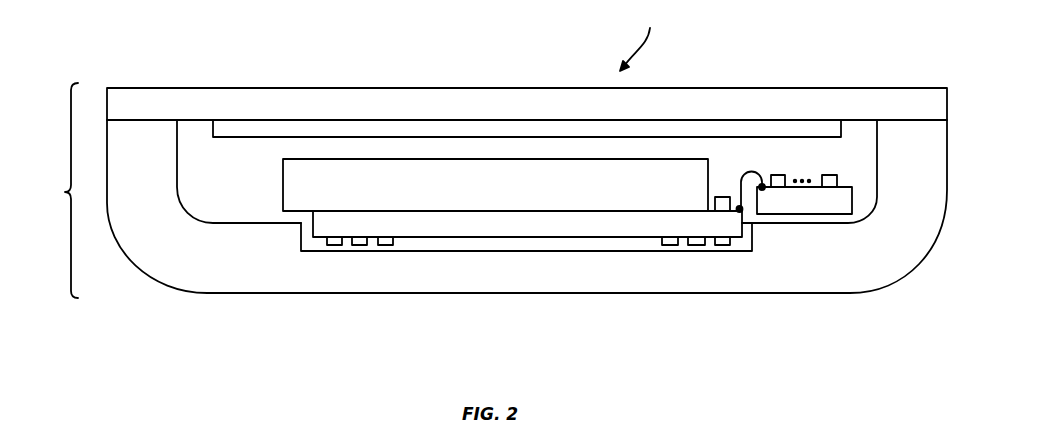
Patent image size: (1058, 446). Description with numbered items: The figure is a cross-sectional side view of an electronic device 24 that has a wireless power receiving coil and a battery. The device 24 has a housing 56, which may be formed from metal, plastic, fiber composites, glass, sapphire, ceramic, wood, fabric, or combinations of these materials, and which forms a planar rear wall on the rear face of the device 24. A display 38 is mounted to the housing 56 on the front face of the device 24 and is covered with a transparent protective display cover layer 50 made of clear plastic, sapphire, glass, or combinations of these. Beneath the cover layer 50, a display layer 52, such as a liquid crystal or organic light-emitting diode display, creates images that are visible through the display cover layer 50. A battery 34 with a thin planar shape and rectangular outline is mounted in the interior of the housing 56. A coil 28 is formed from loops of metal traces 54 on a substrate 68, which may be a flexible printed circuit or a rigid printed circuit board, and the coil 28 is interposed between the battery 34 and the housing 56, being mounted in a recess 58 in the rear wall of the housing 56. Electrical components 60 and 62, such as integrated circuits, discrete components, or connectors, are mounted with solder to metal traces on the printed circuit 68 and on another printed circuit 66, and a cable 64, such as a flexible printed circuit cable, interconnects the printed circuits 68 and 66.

The electronic device 24 is at (54, 190).
The display 38 is at (640, 39).
The display cover layer 50 is at (697, 106).
The display layer 52 is at (512, 127).
The housing 56 is at (172, 263).
The recess 58 is at (572, 251).
The substrate 68 is at (511, 225).
The battery 34 is at (293, 184).
The coil 28 is at (400, 243).
The metal traces 54 is at (385, 246).
The electrical component 60 is at (723, 196).
The cable 64 is at (752, 171).
The printed circuit 66 is at (805, 203).
The electrical component 62 is at (829, 174).